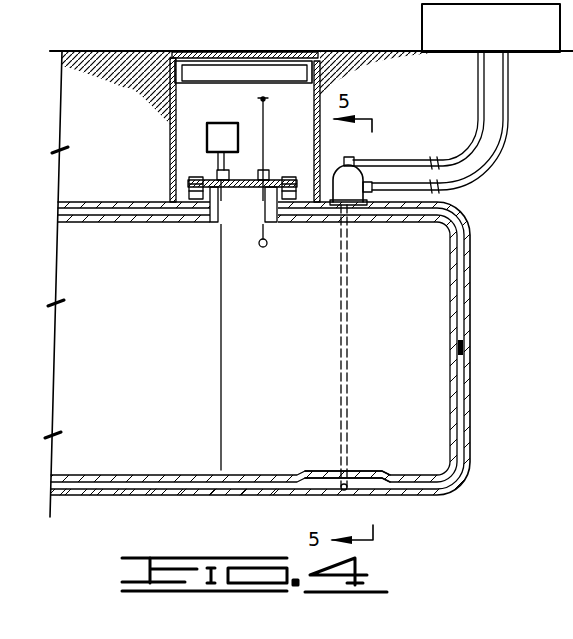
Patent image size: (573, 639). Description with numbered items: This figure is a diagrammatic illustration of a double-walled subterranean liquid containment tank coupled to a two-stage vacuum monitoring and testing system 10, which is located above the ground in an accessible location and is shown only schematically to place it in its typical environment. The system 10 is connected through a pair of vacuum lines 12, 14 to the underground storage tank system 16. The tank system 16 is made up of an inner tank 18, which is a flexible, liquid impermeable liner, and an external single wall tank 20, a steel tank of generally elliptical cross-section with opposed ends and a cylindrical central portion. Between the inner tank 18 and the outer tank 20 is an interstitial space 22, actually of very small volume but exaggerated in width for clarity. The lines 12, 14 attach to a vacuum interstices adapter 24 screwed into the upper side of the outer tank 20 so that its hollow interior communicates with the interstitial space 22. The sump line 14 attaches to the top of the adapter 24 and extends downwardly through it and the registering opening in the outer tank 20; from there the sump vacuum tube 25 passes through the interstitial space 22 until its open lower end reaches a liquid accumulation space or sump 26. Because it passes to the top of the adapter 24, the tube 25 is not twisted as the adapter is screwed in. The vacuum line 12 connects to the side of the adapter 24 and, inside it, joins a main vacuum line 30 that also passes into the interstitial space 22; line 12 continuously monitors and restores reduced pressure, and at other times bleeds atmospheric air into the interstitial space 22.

The two-stage vacuum monitoring and testing system 10 is at (502, 31).
The vacuum line 12 is at (507, 92).
The sump line 14 is at (478, 88).
The underground storage tank system 16 is at (472, 423).
The inner tank 18 is at (452, 355).
The external single wall tank 20 is at (473, 257).
The interstitial space 22 is at (193, 488).
The vacuum interstices adapter 24 is at (352, 182).
The sump vacuum tube 25 is at (348, 319).
The sump 26 is at (368, 487).
The main vacuum line 30 is at (459, 343).